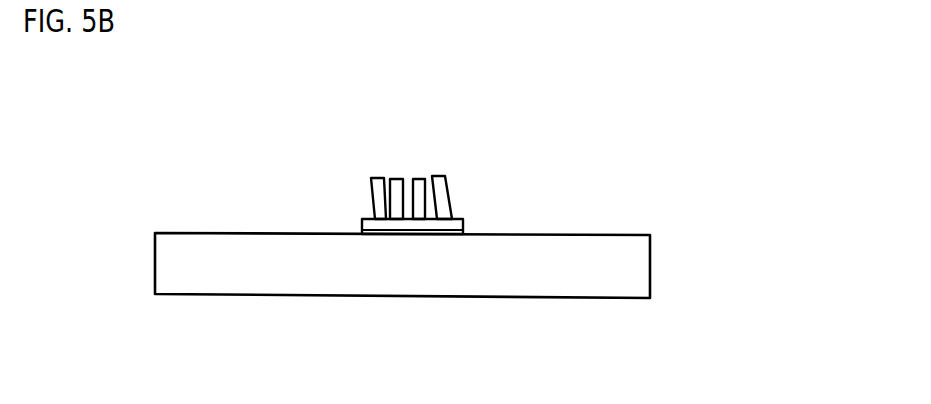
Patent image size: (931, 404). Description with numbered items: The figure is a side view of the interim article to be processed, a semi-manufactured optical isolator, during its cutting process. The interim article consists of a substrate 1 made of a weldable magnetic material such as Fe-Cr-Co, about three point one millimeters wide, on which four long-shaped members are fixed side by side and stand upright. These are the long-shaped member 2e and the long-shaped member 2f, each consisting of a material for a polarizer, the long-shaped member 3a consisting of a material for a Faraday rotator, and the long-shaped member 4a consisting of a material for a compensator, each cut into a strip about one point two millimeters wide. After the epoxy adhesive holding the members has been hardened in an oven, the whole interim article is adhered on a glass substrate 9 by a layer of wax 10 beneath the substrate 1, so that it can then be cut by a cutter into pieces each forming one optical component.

The substrate 1 is at (364, 225).
The long-shaped member 2e is at (374, 187).
The long-shaped member 3a is at (400, 181).
The long-shaped member 2f is at (423, 187).
The long-shaped member 4a is at (447, 203).
The glass substrate 9 is at (635, 268).
The wax 10 is at (372, 233).